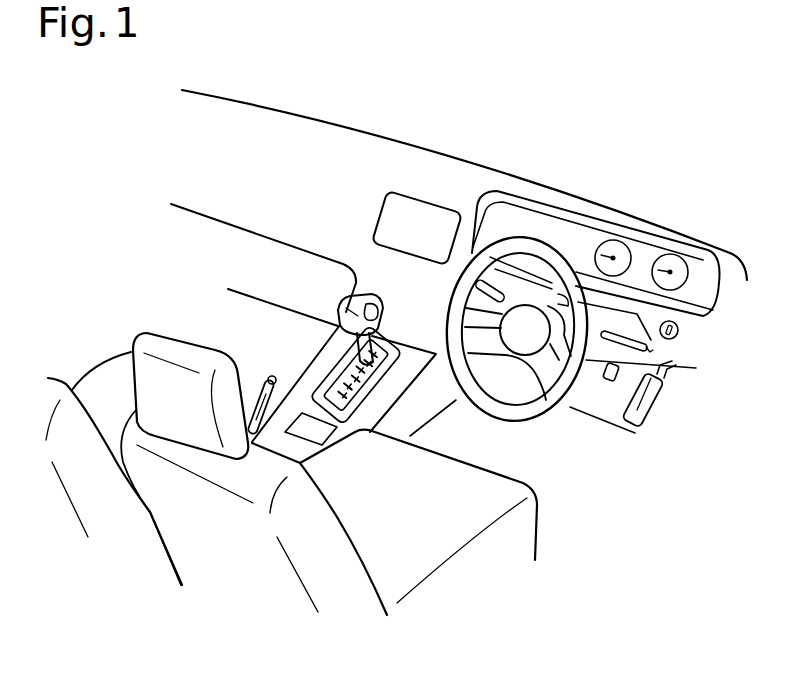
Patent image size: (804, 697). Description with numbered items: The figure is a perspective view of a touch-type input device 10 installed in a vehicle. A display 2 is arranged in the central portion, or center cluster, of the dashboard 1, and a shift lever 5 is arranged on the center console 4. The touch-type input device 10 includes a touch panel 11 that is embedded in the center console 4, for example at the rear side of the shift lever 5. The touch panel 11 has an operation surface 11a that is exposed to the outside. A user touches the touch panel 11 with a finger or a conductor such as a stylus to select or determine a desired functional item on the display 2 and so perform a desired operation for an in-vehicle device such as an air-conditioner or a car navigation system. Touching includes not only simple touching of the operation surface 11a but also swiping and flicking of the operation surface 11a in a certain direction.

The dashboard 1 is at (366, 140).
The display 2 is at (425, 212).
The center console 4 is at (318, 356).
The shift lever 5 is at (391, 328).
The touch-type input device 10 is at (335, 480).
The operation surface 11a is at (359, 451).
The touch panel 11 is at (294, 439).